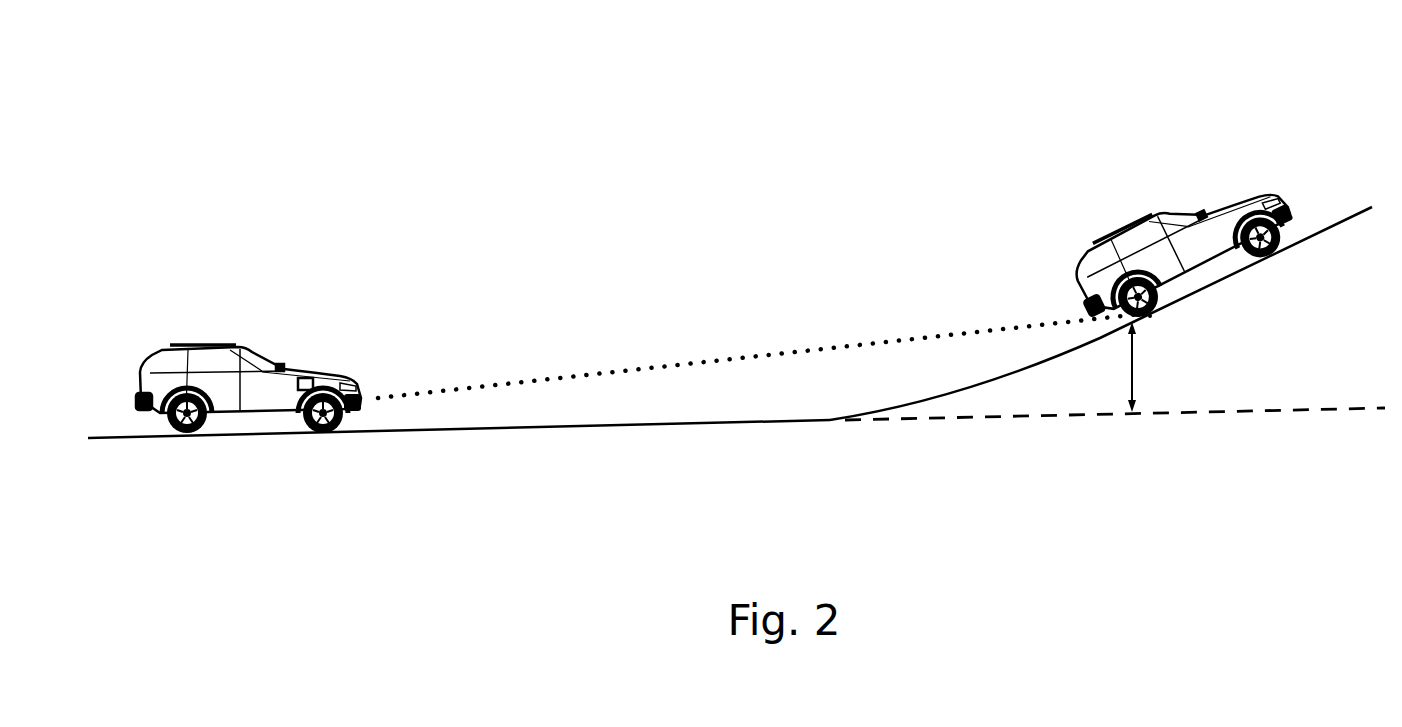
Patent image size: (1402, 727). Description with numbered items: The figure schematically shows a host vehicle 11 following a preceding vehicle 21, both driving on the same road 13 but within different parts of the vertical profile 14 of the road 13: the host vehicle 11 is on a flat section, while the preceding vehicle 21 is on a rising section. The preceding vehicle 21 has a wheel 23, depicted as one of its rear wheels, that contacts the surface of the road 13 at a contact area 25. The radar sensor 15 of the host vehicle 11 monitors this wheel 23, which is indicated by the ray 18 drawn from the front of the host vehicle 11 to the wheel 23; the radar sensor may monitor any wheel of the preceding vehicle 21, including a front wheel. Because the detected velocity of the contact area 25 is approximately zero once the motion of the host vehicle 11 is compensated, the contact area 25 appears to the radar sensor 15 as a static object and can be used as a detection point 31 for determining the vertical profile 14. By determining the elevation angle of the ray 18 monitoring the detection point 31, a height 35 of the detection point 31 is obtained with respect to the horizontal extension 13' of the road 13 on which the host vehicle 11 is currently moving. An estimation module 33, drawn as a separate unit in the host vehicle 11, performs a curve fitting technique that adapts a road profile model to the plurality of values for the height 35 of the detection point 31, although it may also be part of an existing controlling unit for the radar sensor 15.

The host vehicle 11 is at (257, 365).
The road 13 is at (457, 461).
The horizontal extension of the road 13' is at (1115, 440).
The vertical profile of the road 14 is at (1345, 213).
The radar sensor 15 is at (367, 397).
The ray 18 is at (605, 372).
The preceding vehicle 21 is at (1158, 206).
The wheel 23 is at (1130, 270).
The contact area 25 is at (1152, 315).
The detection point 31 is at (1158, 320).
The estimation module 33 is at (307, 378).
The height 35 is at (1134, 370).